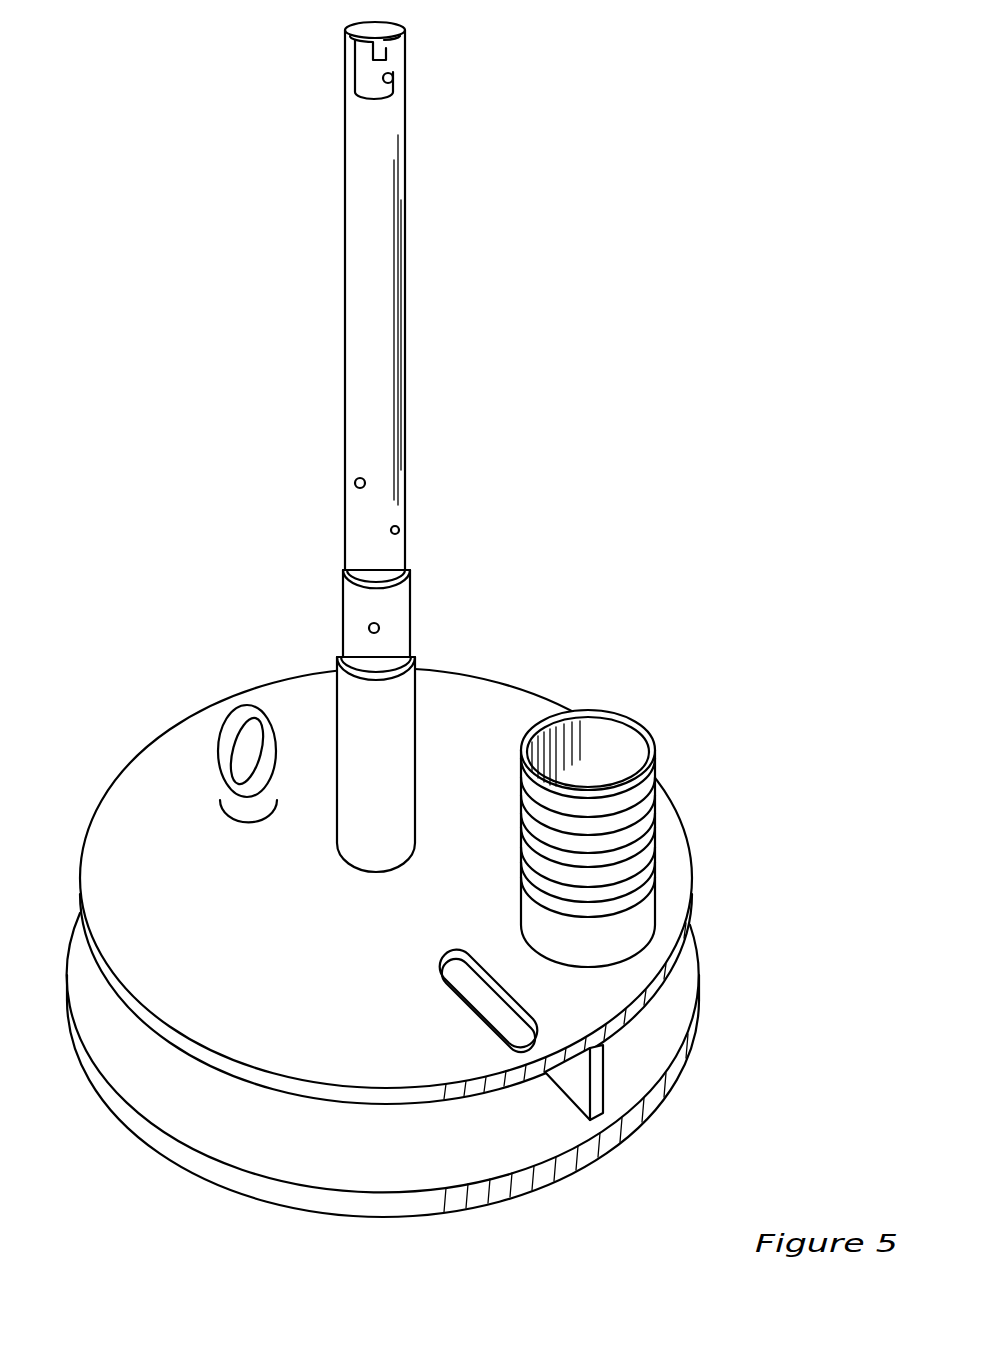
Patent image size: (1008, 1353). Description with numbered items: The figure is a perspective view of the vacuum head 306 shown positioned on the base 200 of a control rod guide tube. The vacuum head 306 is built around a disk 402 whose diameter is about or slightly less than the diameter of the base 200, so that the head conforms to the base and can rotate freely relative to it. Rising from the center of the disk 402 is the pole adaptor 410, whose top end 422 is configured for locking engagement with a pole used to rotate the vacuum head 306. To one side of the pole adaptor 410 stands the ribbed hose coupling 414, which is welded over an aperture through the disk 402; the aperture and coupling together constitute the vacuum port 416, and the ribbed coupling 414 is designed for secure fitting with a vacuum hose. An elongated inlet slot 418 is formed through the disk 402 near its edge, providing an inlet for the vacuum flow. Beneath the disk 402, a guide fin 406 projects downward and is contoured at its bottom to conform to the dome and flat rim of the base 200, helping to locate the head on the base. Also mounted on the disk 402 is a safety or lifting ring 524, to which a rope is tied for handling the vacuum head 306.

The base 200 is at (200, 1177).
The vacuum head 306 is at (188, 555).
The disk 402 is at (268, 955).
The guide fin 406 is at (580, 1085).
The pole adaptor 410 is at (396, 742).
The ribbed hose coupling 414 is at (648, 805).
The vacuum port 416 is at (593, 745).
The inlet slot 418 is at (455, 948).
The top end of pole adaptor 422 is at (400, 62).
The lifting ring 524 is at (218, 735).